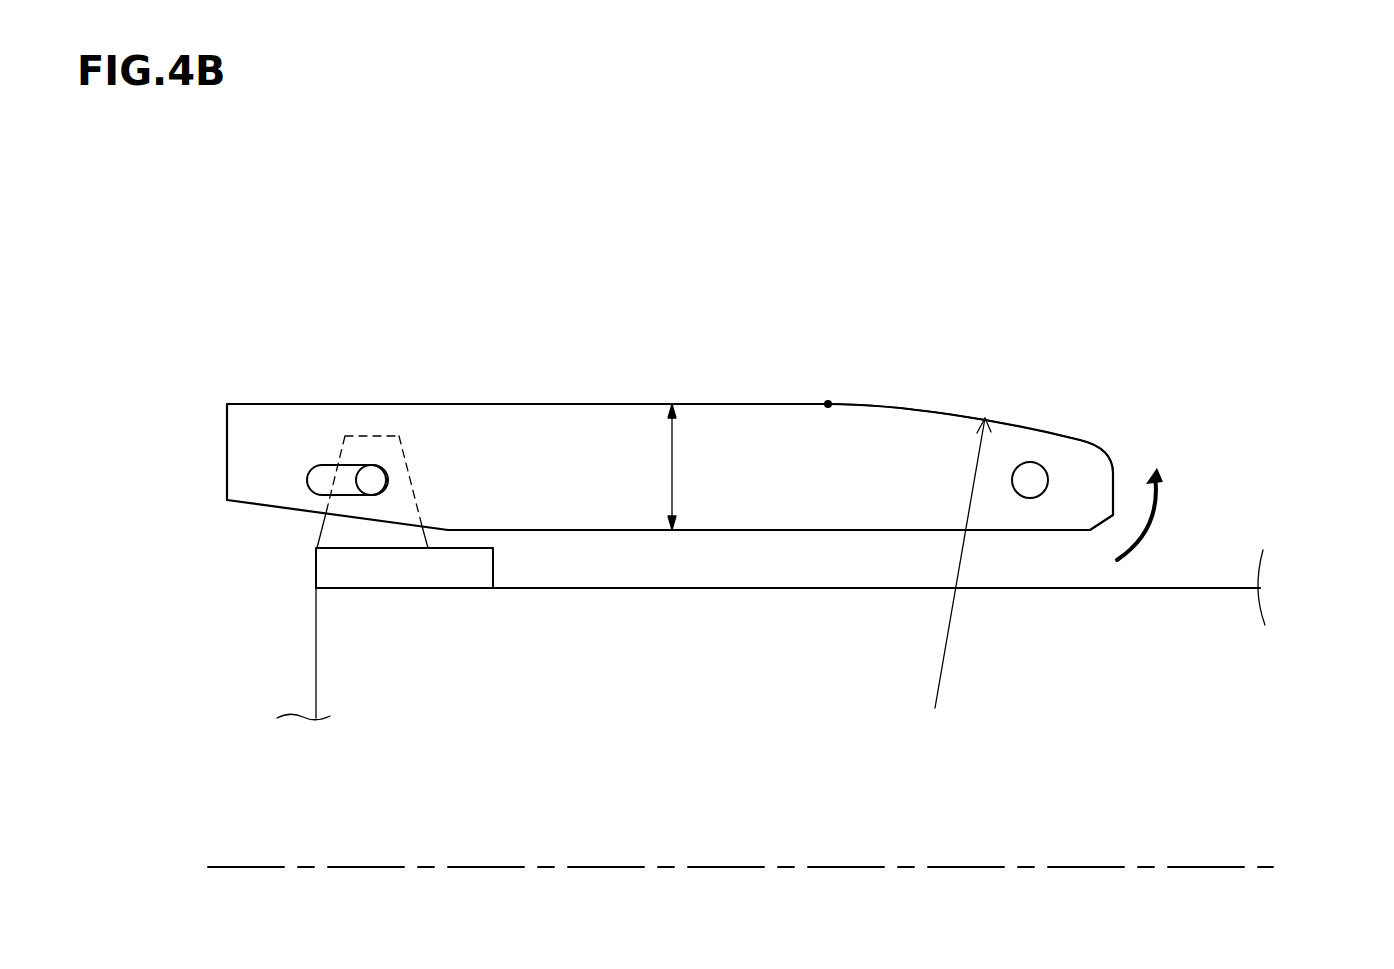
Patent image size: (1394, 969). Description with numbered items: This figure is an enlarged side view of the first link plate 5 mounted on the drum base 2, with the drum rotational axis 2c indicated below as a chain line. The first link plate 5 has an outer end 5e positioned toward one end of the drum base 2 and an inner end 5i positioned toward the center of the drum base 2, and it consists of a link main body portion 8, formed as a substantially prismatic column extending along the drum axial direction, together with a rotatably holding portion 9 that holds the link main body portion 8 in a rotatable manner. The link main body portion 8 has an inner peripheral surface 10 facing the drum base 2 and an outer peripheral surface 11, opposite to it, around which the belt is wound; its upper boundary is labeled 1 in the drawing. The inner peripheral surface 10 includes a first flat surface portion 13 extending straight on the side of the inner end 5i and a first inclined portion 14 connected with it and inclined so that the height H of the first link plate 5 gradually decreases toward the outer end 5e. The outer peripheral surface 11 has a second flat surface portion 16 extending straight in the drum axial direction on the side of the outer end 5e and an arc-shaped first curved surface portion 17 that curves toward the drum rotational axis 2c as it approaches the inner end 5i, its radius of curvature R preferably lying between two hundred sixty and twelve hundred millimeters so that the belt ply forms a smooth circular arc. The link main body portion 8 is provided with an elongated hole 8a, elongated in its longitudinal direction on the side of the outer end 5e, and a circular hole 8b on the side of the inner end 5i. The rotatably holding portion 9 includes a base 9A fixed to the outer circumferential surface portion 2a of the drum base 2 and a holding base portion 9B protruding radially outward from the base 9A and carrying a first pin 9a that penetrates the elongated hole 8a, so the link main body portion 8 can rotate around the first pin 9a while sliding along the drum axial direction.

The top surface 1 is at (588, 404).
The drum base 2 is at (1283, 608).
The outer circumferential surface portion 2a is at (1200, 588).
The drum rotational axis 2c is at (1228, 867).
The first link plate 5 is at (510, 322).
The link main body portion 8 is at (670, 465).
The outer end 5e is at (227, 449).
The inner end 5i is at (1124, 455).
The elongated hole 8a is at (338, 478).
The circular hole 8b is at (1047, 478).
The rotatably holding portion 9 is at (147, 522).
The base 9A is at (316, 570).
The holding base portion 9B is at (320, 525).
The first pin 9a is at (390, 470).
The inner peripheral surface 10 is at (413, 695).
The outer peripheral surface 11 is at (733, 306).
The first flat surface portion 13 is at (565, 530).
The first inclined portion 14 is at (378, 518).
The second flat surface portion 16 is at (727, 404).
The first curved surface portion 17 is at (912, 406).
The height H is at (672, 467).
The radius of curvature R is at (946, 641).